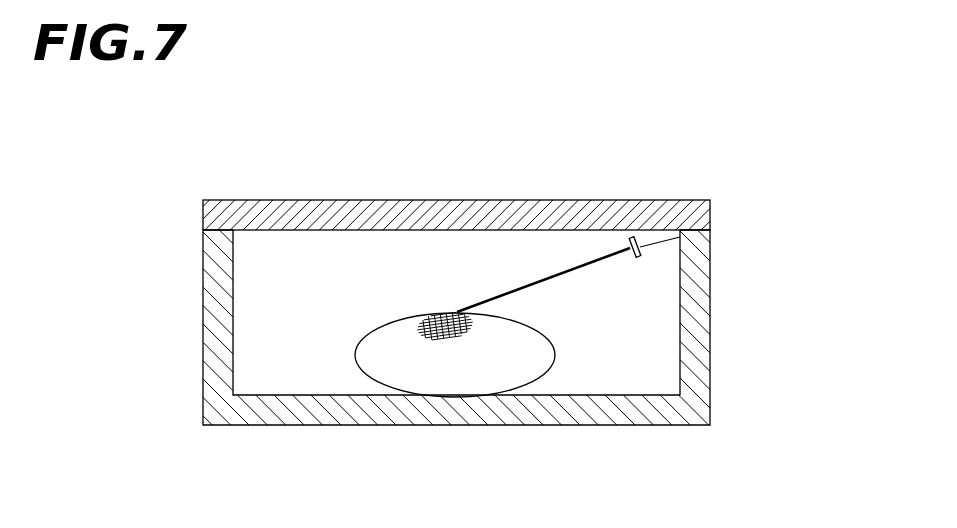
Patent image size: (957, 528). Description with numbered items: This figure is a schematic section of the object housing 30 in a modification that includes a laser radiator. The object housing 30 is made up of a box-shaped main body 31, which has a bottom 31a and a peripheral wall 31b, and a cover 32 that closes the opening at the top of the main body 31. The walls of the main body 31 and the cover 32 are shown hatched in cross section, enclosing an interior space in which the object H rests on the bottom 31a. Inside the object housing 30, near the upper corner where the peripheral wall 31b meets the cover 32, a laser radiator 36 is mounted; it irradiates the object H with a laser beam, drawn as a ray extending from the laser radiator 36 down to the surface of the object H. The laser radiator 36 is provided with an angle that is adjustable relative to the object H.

The object housing 30 is at (442, 312).
The main body 31 is at (442, 359).
The bottom 31a is at (448, 408).
The peripheral wall 31b is at (203, 335).
The cover 32 is at (262, 210).
The laser radiator 36 is at (653, 245).
The object H is at (527, 343).